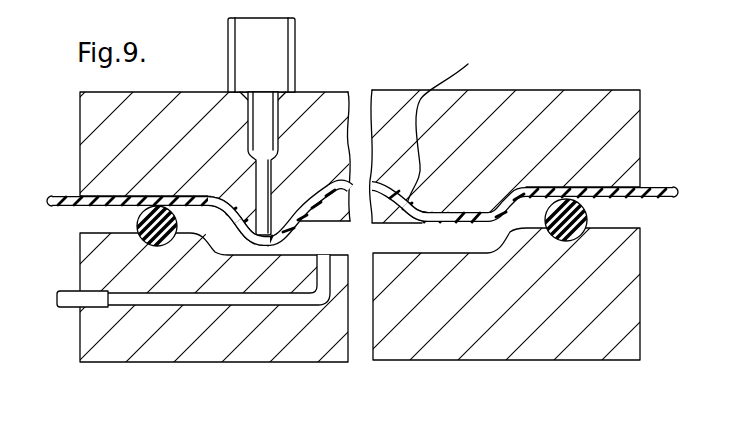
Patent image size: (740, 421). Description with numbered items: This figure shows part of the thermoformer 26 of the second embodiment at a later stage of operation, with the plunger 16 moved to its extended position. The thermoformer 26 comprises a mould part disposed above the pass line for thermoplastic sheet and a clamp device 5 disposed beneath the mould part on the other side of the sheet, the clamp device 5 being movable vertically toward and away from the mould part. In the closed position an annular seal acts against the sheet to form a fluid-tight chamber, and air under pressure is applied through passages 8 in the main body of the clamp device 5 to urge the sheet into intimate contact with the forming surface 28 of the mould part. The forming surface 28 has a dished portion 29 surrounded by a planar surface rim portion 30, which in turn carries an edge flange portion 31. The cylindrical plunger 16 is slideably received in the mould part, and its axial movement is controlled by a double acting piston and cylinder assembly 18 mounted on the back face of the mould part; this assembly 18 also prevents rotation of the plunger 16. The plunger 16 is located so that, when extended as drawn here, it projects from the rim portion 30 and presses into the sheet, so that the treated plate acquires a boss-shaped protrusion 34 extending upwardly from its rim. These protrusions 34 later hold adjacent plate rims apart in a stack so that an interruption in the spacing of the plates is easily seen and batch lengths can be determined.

The clamp device 5 is at (476, 362).
The passages 8 is at (72, 303).
The plunger 16 is at (303, 224).
The piston and cylinder assembly 18 is at (297, 40).
The thermoformer 26 is at (536, 101).
The forming surface 28 is at (468, 64).
The dished portion 29 is at (352, 100).
The rim portion 30 is at (436, 203).
The edge flange portion 31 is at (220, 212).
The boss-shaped protrusions 34 is at (248, 235).